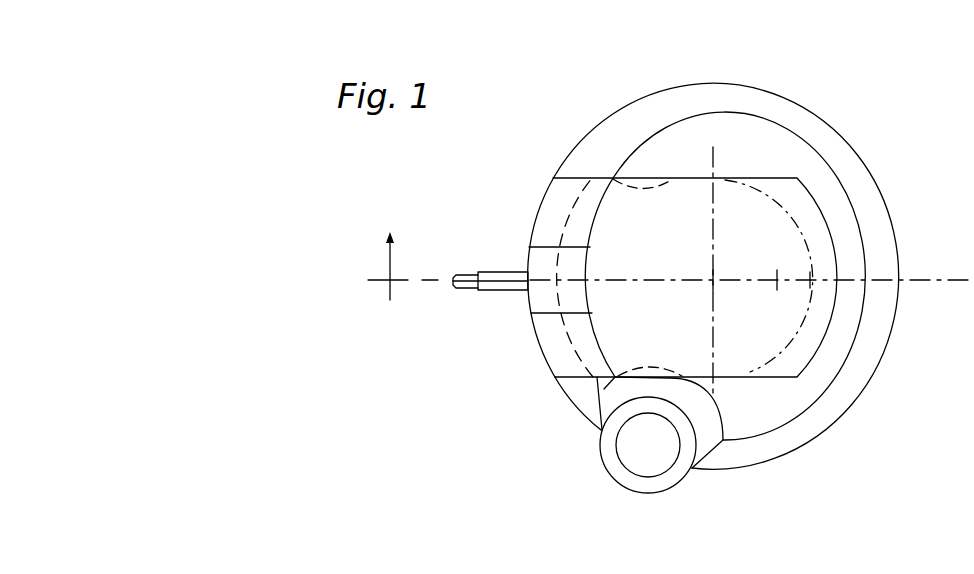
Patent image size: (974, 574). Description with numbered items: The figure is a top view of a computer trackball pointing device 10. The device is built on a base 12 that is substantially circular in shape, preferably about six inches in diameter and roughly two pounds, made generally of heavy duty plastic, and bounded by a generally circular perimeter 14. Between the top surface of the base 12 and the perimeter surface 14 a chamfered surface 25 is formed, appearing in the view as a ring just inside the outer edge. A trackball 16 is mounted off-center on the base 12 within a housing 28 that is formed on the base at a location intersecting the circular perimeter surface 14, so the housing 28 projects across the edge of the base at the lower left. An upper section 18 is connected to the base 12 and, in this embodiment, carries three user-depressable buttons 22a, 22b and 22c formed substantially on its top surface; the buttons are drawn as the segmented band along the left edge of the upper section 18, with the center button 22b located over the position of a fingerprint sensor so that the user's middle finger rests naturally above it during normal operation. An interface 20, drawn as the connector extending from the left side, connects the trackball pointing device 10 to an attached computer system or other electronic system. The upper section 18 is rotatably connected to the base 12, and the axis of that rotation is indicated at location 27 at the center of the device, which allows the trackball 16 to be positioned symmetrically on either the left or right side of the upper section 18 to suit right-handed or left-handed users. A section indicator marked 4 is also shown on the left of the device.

The computer trackball pointing device 10 is at (892, 92).
The base 12 is at (832, 360).
The perimeter 14 is at (896, 349).
The trackball 16 is at (653, 463).
The upper section 18 is at (693, 178).
The interface 20 is at (493, 272).
The user-depressable button 22a is at (553, 352).
The user-depressable button 22b is at (540, 298).
The user-depressable button 22c is at (553, 210).
The chamfered surface 25 is at (877, 212).
The axis of rotation 27 is at (723, 293).
The housing 28 is at (613, 488).
The section line 4 is at (377, 266).